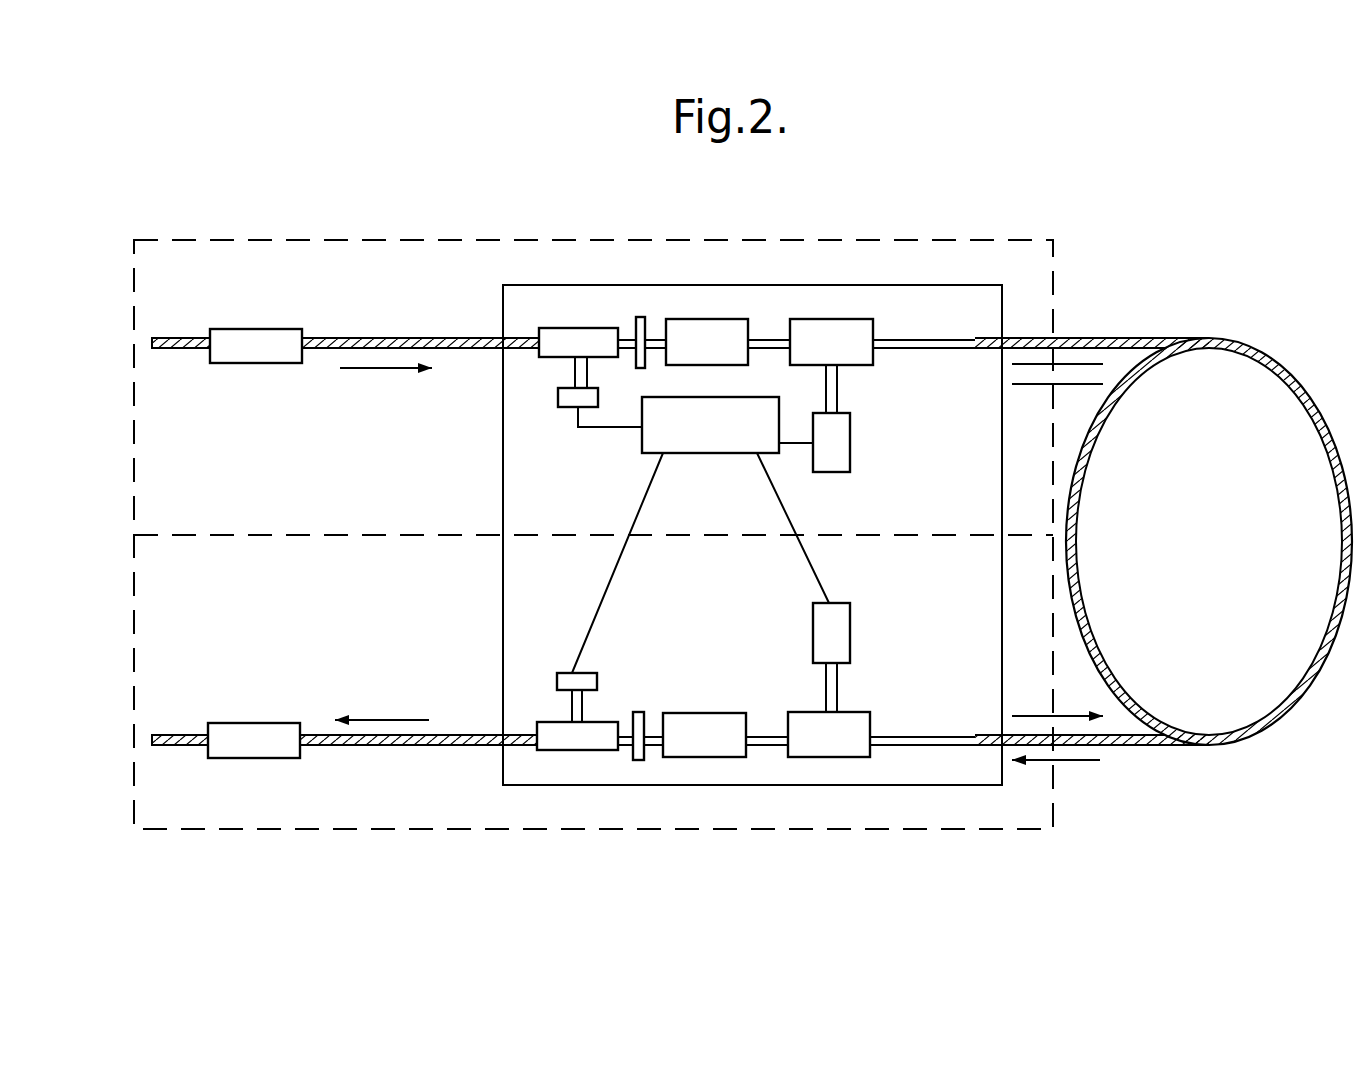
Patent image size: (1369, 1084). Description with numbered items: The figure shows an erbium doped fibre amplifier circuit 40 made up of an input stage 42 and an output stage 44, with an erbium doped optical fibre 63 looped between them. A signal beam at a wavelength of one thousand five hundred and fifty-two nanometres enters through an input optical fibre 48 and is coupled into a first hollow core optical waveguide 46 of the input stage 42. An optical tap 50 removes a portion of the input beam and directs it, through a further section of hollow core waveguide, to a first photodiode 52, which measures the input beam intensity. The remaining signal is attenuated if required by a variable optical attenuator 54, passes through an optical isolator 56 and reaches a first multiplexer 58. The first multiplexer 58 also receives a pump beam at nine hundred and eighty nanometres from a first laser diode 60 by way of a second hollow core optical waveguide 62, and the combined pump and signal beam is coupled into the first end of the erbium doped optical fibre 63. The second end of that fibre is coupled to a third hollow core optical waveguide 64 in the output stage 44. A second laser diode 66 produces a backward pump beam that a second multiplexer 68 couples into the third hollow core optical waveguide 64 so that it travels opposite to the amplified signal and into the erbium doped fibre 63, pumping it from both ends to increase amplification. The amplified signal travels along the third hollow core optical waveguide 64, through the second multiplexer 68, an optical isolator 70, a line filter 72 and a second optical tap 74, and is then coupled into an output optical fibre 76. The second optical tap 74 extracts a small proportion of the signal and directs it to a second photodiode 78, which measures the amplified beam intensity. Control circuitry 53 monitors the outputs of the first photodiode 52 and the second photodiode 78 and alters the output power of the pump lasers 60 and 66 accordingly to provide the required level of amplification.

The EDFA circuit 40 is at (1063, 242).
The input stage 42 is at (129, 396).
The output stage 44 is at (129, 613).
The first hollow core optical waveguide 46 is at (525, 345).
The input optical fibre 48 is at (387, 342).
The optical tap 50 is at (578, 328).
The first photodiode 52 is at (568, 402).
The control circuitry 53 is at (700, 535).
The variable optical attenuator 54 is at (641, 317).
The optical isolator 56 is at (707, 319).
The first multiplexer 58 is at (833, 319).
The first laser diode 60 is at (845, 445).
The second hollow core optical waveguide 62 is at (838, 385).
The erbium doped optical fibre 63 is at (1232, 336).
The third hollow core optical waveguide 64 is at (912, 735).
The second laser diode 66 is at (838, 635).
The second multiplexer 68 is at (830, 757).
The optical isolator 70 is at (710, 757).
The line filter 72 is at (637, 762).
The second optical tap 74 is at (577, 750).
The output optical fibre 76 is at (418, 746).
The second photodiode 78 is at (585, 682).